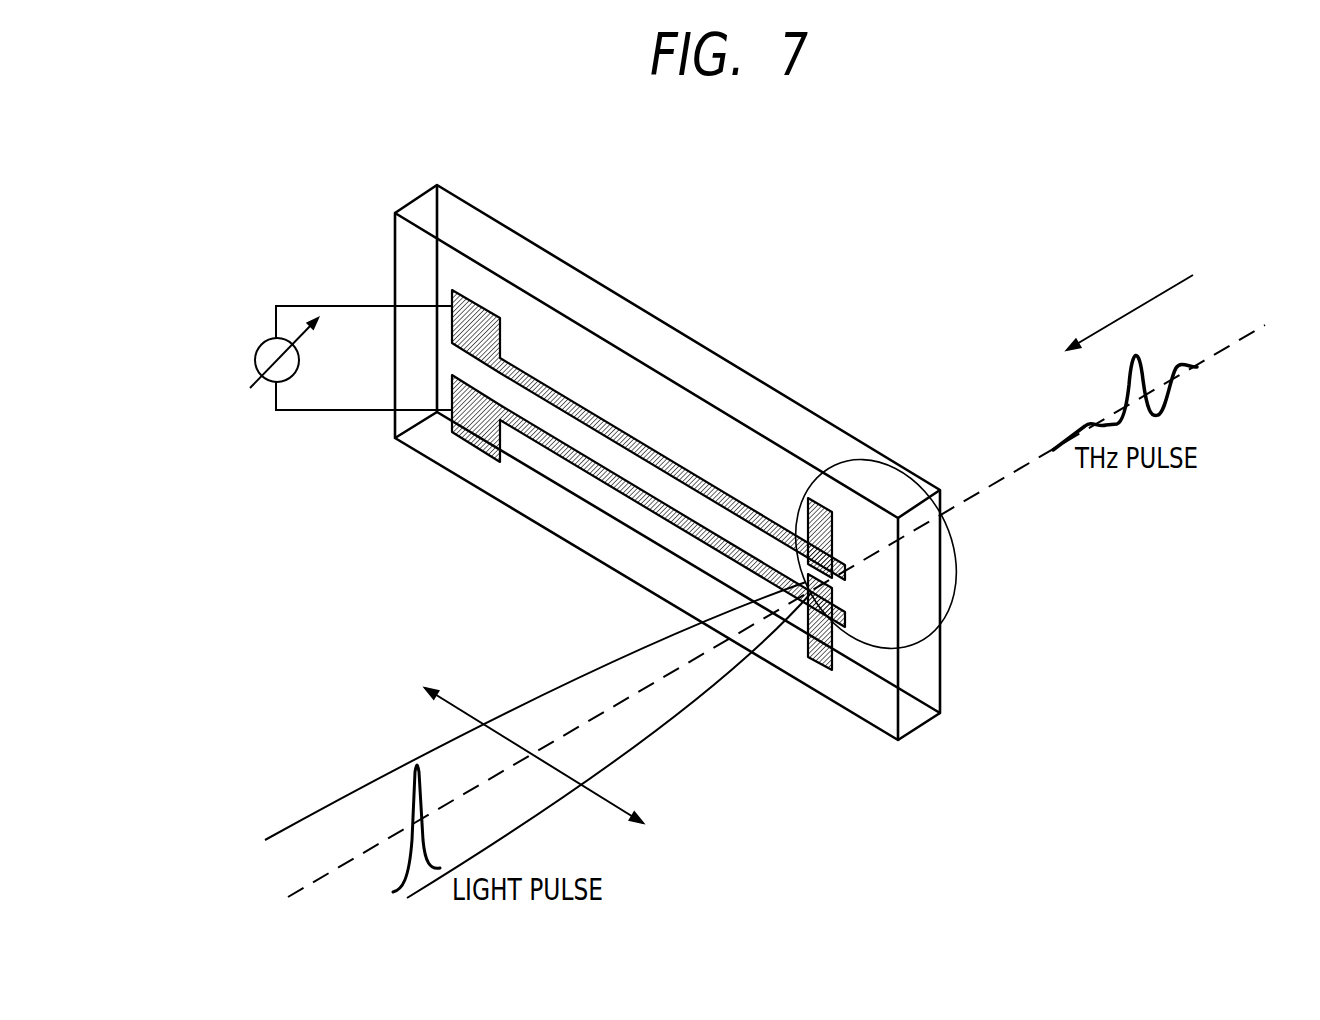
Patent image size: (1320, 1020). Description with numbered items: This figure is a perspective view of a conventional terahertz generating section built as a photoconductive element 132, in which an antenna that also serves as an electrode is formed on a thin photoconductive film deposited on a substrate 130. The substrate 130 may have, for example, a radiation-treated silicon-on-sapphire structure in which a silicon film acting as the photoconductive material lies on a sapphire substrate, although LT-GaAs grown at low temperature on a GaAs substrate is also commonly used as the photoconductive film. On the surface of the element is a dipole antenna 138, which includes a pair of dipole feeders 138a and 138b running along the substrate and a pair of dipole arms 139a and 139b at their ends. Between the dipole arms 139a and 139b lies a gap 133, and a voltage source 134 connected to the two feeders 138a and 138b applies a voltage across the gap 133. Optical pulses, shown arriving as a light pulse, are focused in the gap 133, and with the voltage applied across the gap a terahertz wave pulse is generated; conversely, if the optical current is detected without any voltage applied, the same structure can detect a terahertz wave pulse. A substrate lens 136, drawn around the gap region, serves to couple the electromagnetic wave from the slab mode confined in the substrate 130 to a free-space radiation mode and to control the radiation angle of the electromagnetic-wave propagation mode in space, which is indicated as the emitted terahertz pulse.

The substrate 130 is at (600, 386).
The photoconductive antenna element 132 is at (667, 470).
The gap 133 is at (840, 626).
The bias power supply 134 is at (256, 346).
The substrate lens 136 is at (952, 560).
The dipole antenna 138 is at (679, 546).
The dipole feeder 138a is at (679, 435).
The dipole feeder 138b is at (648, 588).
The dipole arm 139a is at (834, 528).
The dipole arm 139b is at (816, 660).